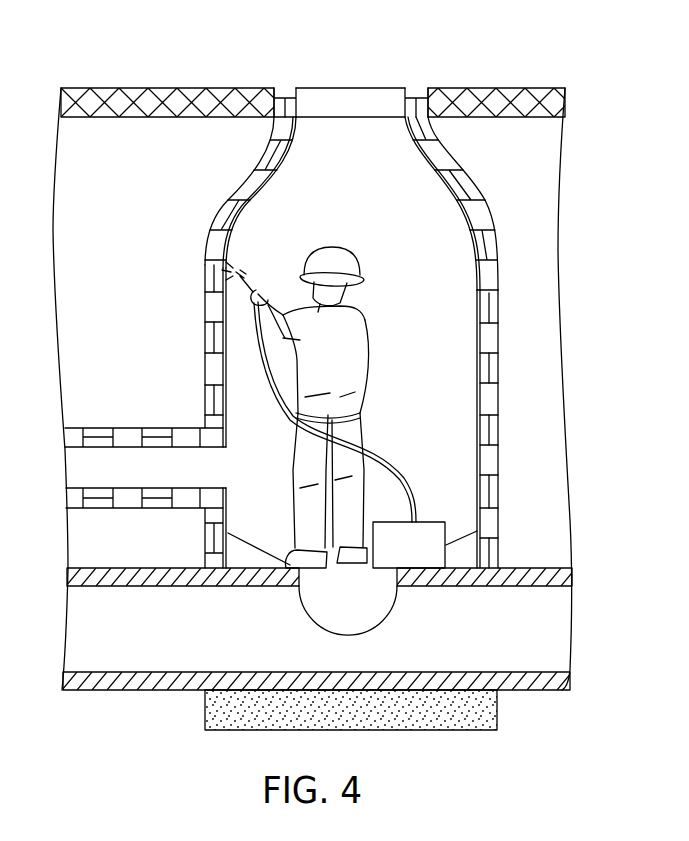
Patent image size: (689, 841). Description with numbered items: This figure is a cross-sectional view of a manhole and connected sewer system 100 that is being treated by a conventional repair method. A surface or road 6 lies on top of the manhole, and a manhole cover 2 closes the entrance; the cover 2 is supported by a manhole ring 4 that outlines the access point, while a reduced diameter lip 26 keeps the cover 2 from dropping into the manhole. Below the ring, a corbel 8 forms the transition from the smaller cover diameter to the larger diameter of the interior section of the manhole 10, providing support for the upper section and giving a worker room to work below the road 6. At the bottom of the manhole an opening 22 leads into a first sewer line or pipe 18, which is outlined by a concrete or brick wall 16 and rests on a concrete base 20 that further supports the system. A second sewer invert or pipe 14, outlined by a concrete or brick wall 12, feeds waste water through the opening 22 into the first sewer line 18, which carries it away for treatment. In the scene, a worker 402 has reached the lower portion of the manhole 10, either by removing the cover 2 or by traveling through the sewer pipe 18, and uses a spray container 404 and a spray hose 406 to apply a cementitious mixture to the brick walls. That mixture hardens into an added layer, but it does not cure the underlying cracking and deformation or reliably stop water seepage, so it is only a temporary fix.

The manhole and connected sewer system 100 is at (250, 73).
The manhole cover 2 is at (335, 97).
The manhole ring 4 is at (422, 97).
The surface or road 6 is at (490, 106).
The reduced diameter lip 26 is at (278, 135).
The corbel 8 is at (447, 202).
The interior section of the manhole 10 is at (443, 327).
The concrete or brick wall 12 is at (128, 435).
The second sewer invert or pipe 14 is at (75, 453).
The concrete or brick wall 16 is at (75, 578).
The first sewer line or pipe 18 is at (87, 630).
The concrete base 20 is at (215, 702).
The opening 22 is at (380, 597).
The worker 402 is at (340, 319).
The spray container 404 is at (420, 540).
The spray hose 406 is at (385, 462).